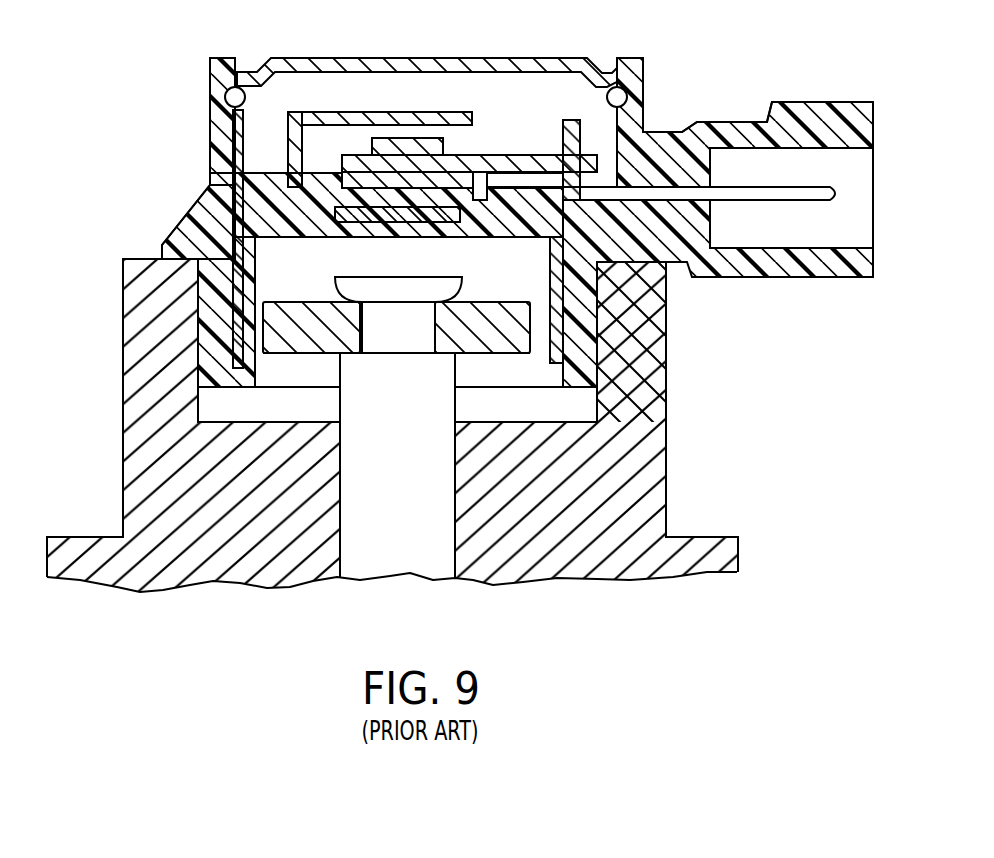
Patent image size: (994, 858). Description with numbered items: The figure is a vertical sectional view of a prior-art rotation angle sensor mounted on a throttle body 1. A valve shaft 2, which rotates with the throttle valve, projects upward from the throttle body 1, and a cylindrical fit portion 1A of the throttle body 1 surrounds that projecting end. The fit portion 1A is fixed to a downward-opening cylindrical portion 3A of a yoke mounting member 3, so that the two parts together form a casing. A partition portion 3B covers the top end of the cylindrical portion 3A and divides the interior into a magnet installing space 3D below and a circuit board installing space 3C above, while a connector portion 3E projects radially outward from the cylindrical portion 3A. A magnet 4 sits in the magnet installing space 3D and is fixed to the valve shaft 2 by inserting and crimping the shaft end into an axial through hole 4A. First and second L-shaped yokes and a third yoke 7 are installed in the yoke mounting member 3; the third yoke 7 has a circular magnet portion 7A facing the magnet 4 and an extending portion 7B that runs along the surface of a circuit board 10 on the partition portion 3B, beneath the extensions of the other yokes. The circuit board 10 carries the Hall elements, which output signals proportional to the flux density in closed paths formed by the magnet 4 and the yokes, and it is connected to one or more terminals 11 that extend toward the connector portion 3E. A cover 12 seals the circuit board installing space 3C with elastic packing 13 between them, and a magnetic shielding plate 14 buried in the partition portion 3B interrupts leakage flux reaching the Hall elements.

The throttle body 1 is at (558, 568).
The fit portion 1A is at (657, 437).
The valve shaft 2 is at (387, 572).
The yoke mounting member 3 is at (493, 233).
The cylindrical portion 3A is at (177, 235).
The partition portion 3B is at (257, 198).
The circuit board installing space 3C is at (235, 132).
The magnet installing space 3D is at (597, 413).
The connector portion 3E is at (787, 108).
The magnet 4 is at (280, 313).
The through hole 4A is at (367, 353).
The third yoke 7 is at (467, 178).
The magnet portion 7A is at (553, 300).
The extending portion 7B is at (398, 167).
The circuit board 10 is at (533, 162).
The terminal 11 is at (837, 195).
The cover 12 is at (577, 64).
The packing 13 is at (607, 77).
The magnetic shielding plate 14 is at (357, 217).